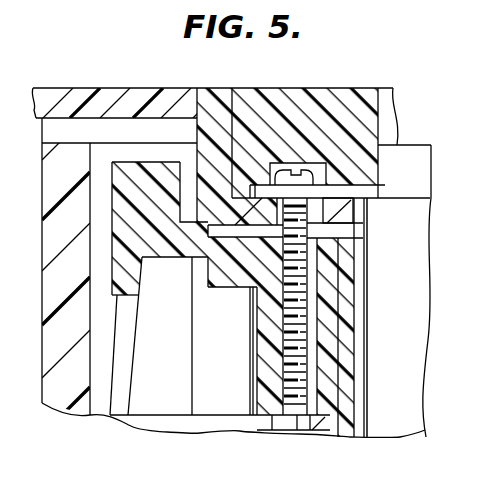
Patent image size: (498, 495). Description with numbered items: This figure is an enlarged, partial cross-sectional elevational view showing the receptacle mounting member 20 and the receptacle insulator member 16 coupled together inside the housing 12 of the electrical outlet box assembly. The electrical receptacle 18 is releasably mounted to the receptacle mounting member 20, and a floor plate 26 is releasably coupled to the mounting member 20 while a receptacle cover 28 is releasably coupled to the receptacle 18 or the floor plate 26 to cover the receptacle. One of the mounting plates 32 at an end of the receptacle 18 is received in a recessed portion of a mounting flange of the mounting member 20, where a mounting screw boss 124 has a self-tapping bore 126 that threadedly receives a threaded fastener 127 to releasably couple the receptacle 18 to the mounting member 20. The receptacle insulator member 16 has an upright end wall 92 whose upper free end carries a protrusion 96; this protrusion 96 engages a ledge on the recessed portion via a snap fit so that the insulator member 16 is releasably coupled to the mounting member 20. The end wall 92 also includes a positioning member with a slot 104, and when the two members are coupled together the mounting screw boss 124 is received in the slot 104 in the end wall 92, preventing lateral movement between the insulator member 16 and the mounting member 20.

The housing 12 is at (61, 409).
The receptacle insulator member 16 is at (356, 445).
The electrical receptacle 18 is at (424, 138).
The receptacle mounting member 20 is at (160, 412).
The floor plate 26 is at (200, 86).
The receptacle cover 28 is at (299, 86).
The mounting plate 32 is at (383, 194).
The end wall 92 is at (356, 412).
The protrusion 96 is at (330, 256).
The slot 104 is at (340, 345).
The mounting screw boss 124 is at (265, 421).
The self-tapping bore 126 is at (307, 392).
The threaded fastener 127 is at (293, 345).